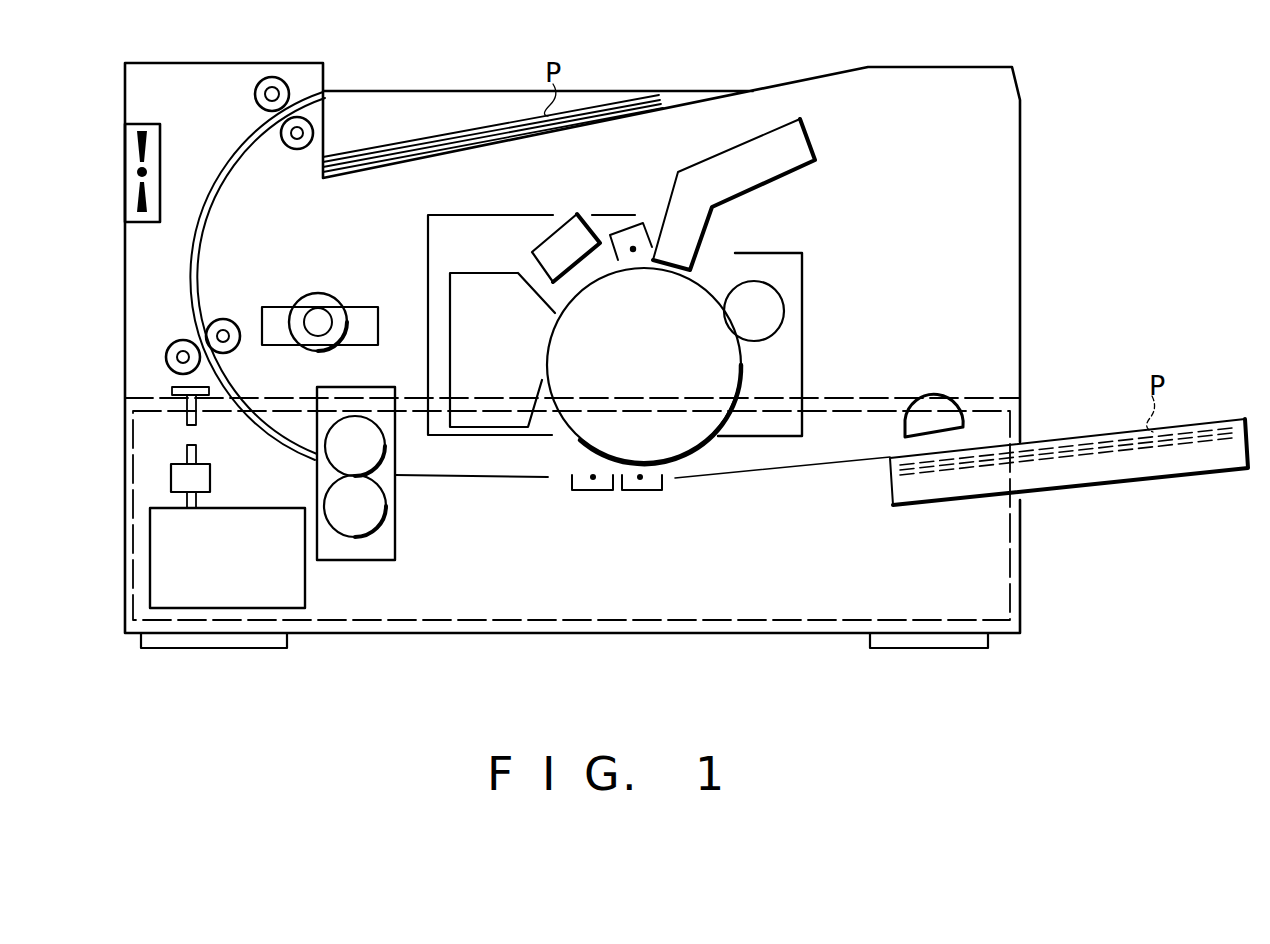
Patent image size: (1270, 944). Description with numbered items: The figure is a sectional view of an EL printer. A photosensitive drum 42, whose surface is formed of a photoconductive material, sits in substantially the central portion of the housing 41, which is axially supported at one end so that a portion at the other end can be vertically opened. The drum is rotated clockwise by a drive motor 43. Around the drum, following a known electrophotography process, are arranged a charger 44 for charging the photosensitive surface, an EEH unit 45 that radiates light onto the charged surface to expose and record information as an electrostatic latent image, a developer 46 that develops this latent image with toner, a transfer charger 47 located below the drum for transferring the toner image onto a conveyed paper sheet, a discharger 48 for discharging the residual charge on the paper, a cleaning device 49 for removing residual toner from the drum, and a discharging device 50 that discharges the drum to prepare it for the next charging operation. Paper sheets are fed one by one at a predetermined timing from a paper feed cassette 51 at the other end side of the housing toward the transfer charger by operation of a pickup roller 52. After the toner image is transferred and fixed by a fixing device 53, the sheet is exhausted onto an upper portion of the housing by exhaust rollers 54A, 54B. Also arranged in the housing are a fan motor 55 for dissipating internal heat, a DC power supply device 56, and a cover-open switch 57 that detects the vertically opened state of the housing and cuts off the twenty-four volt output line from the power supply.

The housing 41 is at (1020, 238).
The photosensitive drum 42 is at (700, 422).
The drive motor 43 is at (330, 305).
The charger 44 is at (630, 240).
The EEH unit 45 is at (808, 138).
The developer 46 is at (802, 277).
The transfer charger 47 is at (640, 490).
The discharger 48 is at (592, 490).
The cleaning device 49 is at (478, 283).
The discharging device 50 is at (576, 272).
The paper feed cassette 51 is at (1190, 466).
The pickup roller 52 is at (938, 412).
The fixing device 53 is at (388, 520).
The exhaust rollers 54A is at (225, 321).
The exhaust rollers 54B is at (272, 78).
The fan motor 55 is at (160, 140).
The DC power supply device 56 is at (300, 587).
The cover-open switch 57 is at (210, 477).